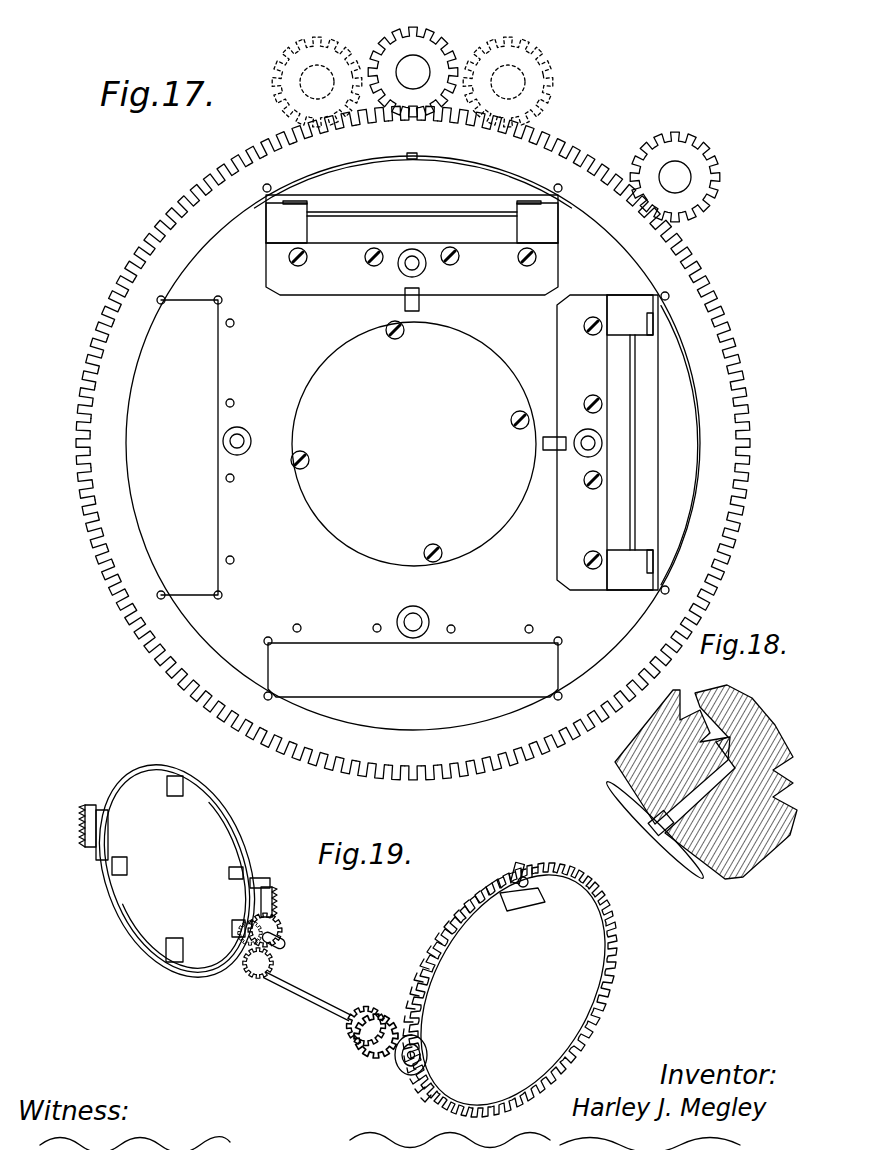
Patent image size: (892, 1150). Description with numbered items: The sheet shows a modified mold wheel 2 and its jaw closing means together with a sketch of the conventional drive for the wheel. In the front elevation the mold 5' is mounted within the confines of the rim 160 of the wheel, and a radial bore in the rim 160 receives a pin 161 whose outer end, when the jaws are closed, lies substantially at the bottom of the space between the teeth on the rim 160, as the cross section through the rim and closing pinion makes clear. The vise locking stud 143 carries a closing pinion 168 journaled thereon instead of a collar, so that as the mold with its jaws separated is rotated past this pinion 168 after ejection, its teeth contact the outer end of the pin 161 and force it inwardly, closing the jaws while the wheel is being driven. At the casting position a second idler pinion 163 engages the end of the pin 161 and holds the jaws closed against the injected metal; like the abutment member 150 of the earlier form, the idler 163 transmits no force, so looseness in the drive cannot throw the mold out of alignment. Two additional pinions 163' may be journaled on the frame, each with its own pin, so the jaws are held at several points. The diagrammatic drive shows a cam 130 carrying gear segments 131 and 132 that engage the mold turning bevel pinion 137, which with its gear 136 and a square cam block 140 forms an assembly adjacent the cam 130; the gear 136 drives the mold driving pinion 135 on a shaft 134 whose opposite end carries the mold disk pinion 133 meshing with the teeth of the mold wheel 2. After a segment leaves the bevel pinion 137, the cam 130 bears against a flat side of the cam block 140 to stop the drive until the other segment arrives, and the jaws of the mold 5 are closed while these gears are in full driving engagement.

In FIG. 19, the mold wheel 2 is at (437, 936).
In FIG. 19, the mold 5 is at (522, 907).
In FIG. 17, the mold 5' is at (412, 255).
In FIG. 19, the cam 130 is at (222, 815).
In FIG. 19, the gear segment 131 is at (79, 827).
In FIG. 19, the gear segment 132 is at (272, 905).
In FIG. 19, the mold disk pinion 133 is at (383, 1068).
In FIG. 19, the shaft 134 is at (302, 992).
In FIG. 19, the mold driving pinion 135 is at (253, 980).
In FIG. 19, the gear 136 is at (281, 928).
In FIG. 19, the mold turning bevel pinion 137 is at (232, 930).
In FIG. 19, the cam block 140 is at (246, 926).
In FIG. 17, the vise locking stud 143 is at (675, 177).
In FIG. 19, the abutment member 150 is at (528, 879).
In FIG. 17, the rim 160 is at (708, 276).
In FIG. 18, the rim 160 is at (678, 695).
In FIG. 17, the pin 161 is at (414, 160).
In FIG. 18, the pin 161 is at (655, 823).
In FIG. 19, the pin 161 is at (614, 846).
In FIG. 17, the idler pinion 163 is at (420, 64).
In FIG. 17, the additional pinion 163' is at (419, 71).
In FIG. 17, the gear 168 is at (693, 141).
In FIG. 18, the gear 168 is at (745, 718).